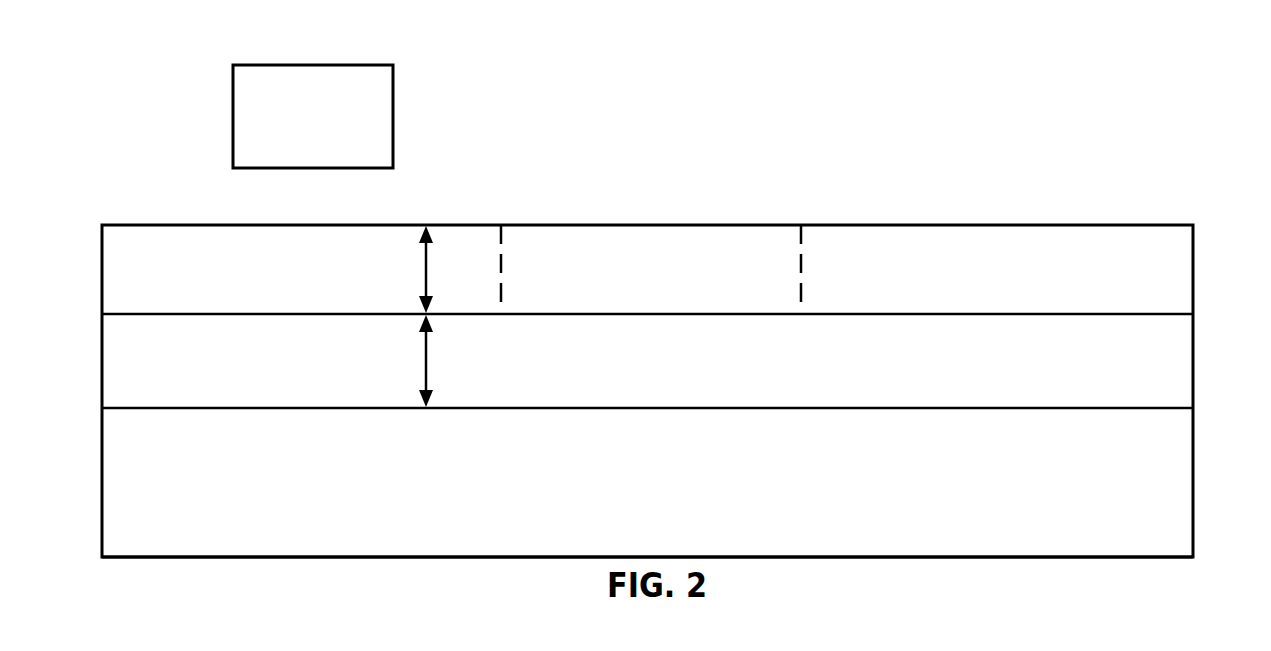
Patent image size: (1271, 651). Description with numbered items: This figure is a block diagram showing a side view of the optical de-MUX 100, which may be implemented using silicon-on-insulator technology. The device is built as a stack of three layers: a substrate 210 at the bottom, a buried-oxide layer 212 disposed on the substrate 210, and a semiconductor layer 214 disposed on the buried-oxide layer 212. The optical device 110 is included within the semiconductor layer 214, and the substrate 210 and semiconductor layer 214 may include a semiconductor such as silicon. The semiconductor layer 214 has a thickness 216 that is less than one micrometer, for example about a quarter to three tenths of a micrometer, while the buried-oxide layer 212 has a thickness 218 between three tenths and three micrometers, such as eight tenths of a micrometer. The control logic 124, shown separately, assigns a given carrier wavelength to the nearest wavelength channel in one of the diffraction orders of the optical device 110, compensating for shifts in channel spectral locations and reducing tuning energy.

The optical de-MUX 100 is at (1048, 80).
The optical device 110 is at (634, 292).
The control logic 124 is at (296, 151).
The substrate 210 is at (632, 506).
The buried-oxide layer 212 is at (1152, 384).
The semiconductor layer 214 is at (1152, 292).
The thickness 216 is at (426, 282).
The thickness 218 is at (426, 374).